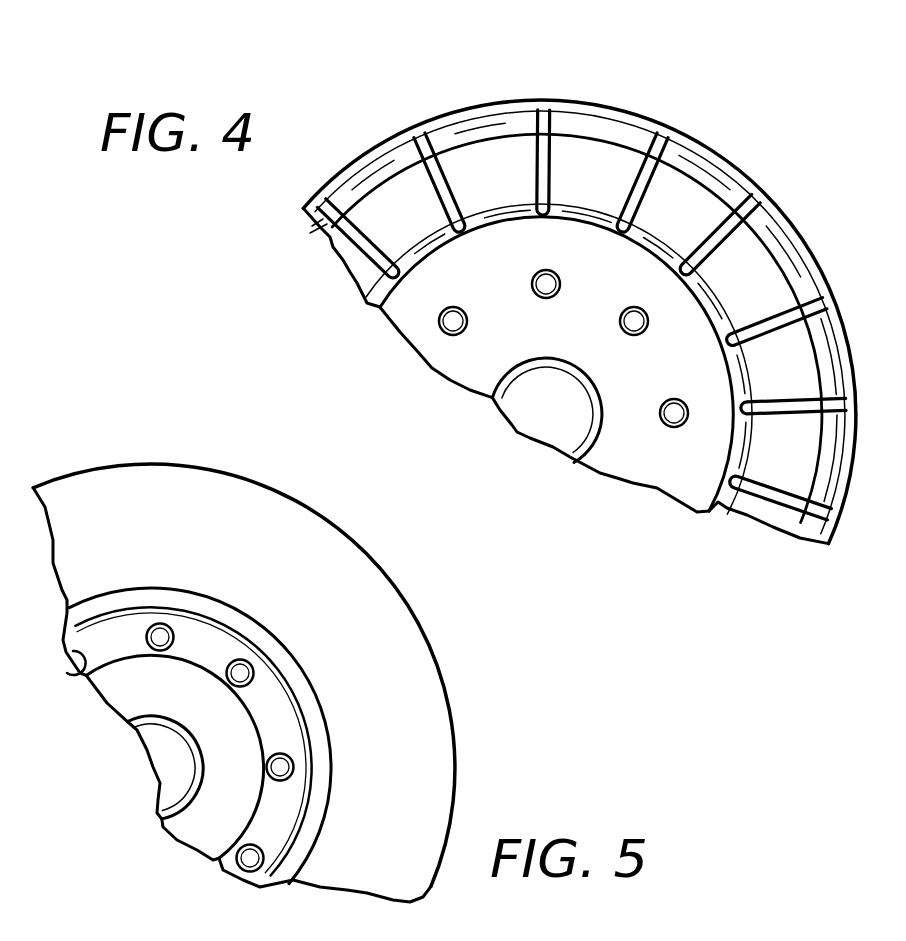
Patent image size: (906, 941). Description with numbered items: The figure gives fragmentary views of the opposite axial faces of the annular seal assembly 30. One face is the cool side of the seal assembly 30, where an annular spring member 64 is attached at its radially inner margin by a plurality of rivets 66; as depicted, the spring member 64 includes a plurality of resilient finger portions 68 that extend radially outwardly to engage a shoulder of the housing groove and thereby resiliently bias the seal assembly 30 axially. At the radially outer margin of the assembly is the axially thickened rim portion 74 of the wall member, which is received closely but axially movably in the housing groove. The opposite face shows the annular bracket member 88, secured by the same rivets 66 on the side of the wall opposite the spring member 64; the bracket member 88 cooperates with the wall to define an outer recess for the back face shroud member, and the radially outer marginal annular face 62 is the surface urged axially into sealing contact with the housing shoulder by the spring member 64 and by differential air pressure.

In FIG. 4, the seal assembly 30 is at (447, 96).
In FIG. 5, the seal assembly 30 is at (437, 634).
In FIG. 4, the rim portion 74 is at (597, 100).
In FIG. 4, the resilient finger portions 68 is at (697, 167).
In FIG. 4, the spring member 64 is at (450, 363).
In FIG. 4, the rivets 66 is at (633, 335).
In FIG. 5, the rivets 66 is at (286, 755).
In FIG. 5, the annular face 62 is at (253, 494).
In FIG. 5, the bracket member 88 is at (270, 810).